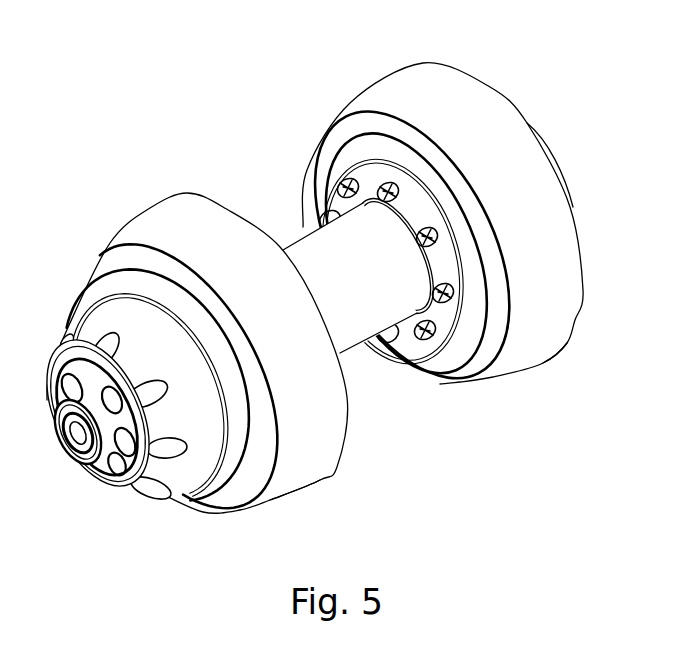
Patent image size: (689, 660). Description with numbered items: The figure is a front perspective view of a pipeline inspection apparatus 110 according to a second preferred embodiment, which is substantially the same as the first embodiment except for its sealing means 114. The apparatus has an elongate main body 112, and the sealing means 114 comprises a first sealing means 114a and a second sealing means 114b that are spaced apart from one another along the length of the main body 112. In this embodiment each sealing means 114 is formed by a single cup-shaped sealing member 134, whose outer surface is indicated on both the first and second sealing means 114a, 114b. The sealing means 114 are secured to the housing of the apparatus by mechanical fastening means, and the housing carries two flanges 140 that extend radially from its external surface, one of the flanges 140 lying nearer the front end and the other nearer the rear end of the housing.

The pipeline inspection apparatus 110 is at (185, 112).
The main body 112 is at (297, 242).
The sealing means 114 is at (520, 380).
The first sealing means 114a is at (108, 232).
The second sealing means 114b is at (358, 98).
The cup-shaped sealing member 134 is at (561, 342).
The flanges 140 is at (410, 337).